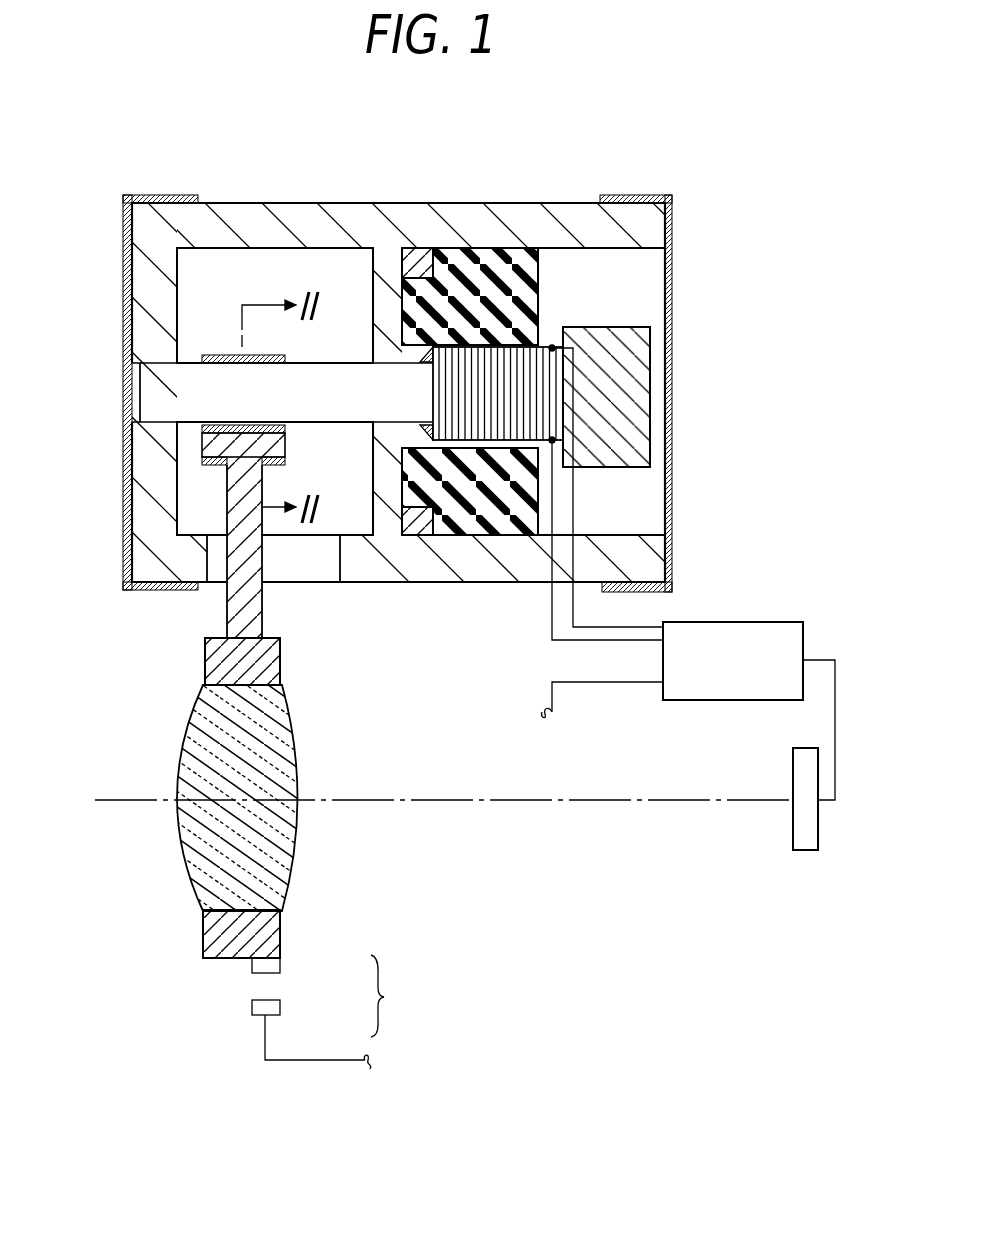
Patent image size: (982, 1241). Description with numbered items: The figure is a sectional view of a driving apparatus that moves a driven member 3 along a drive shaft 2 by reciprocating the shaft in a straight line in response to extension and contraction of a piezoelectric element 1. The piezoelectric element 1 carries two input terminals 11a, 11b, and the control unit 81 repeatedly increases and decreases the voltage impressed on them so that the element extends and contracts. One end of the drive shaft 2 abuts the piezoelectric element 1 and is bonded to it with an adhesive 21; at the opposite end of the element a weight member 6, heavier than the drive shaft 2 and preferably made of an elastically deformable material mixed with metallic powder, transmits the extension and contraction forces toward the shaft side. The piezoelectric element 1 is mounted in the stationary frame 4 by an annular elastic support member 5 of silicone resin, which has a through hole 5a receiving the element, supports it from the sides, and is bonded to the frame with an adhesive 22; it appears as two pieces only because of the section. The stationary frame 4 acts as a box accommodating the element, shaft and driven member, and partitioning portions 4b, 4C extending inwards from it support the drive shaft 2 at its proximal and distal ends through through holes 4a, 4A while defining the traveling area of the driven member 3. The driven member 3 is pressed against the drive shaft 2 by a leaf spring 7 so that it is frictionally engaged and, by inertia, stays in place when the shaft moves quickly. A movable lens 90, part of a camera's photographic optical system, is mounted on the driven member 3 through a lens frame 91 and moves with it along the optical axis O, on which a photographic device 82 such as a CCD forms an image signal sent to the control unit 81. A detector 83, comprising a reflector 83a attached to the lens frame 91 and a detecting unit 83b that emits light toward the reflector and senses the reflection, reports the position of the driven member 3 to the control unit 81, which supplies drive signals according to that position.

The piezoelectric element 1 is at (525, 346).
The drive shaft 2 is at (340, 377).
The driven member 3 is at (203, 436).
The stationary frame 4 is at (472, 215).
The through hole 4a is at (386, 425).
The partitioning portion 4b is at (385, 282).
The through hole 4A is at (157, 364).
The partitioning portion 4C is at (128, 268).
The support member 5 is at (518, 258).
The through hole 5a is at (506, 448).
The weight member 6 is at (636, 468).
The leaf spring 7 is at (214, 354).
The input terminal 11a is at (554, 346).
The input terminal 11b is at (554, 443).
The adhesive 21 is at (420, 354).
The adhesive 22 is at (414, 248).
The control unit 81 is at (738, 622).
The photographic device 82 is at (806, 851).
The detector 83 is at (394, 996).
The reflector 83a is at (282, 966).
The detecting unit 83b is at (282, 1008).
The movable lens 90 is at (198, 708).
The lens frame 91 is at (205, 663).
The optical axis O is at (429, 800).